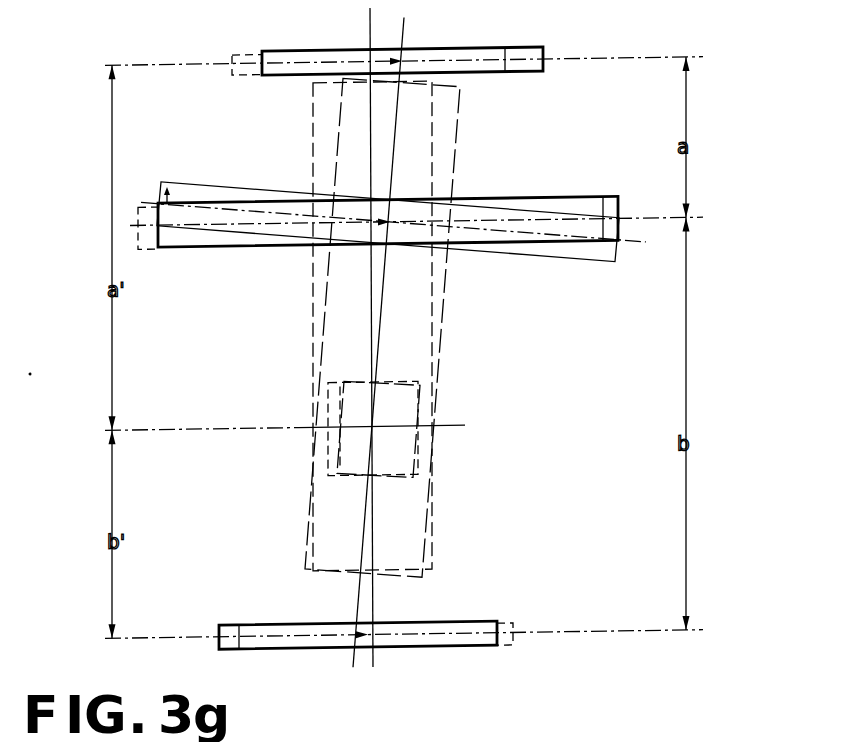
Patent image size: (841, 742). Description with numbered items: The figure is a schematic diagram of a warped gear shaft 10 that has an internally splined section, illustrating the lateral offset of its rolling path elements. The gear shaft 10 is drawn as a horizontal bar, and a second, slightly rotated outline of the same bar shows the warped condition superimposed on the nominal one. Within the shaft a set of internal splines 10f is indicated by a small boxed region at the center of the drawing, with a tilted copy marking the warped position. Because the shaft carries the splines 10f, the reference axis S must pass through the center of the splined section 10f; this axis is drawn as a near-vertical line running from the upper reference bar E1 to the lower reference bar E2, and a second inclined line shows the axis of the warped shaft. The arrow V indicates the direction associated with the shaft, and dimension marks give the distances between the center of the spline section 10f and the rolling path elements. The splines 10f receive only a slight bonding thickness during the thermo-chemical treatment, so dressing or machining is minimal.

The gear shaft 10 is at (531, 206).
The internal splines 10f is at (415, 448).
The upper reference plane bar E1 is at (387, 39).
The lower reference plane bar E2 is at (372, 683).
The longitudinal axis S is at (385, 129).
The velocity vector V is at (178, 155).